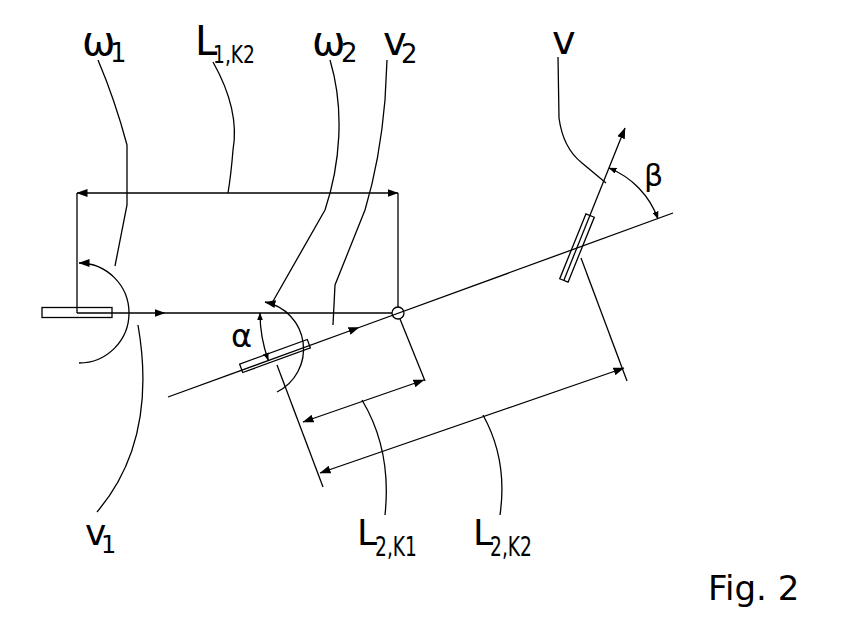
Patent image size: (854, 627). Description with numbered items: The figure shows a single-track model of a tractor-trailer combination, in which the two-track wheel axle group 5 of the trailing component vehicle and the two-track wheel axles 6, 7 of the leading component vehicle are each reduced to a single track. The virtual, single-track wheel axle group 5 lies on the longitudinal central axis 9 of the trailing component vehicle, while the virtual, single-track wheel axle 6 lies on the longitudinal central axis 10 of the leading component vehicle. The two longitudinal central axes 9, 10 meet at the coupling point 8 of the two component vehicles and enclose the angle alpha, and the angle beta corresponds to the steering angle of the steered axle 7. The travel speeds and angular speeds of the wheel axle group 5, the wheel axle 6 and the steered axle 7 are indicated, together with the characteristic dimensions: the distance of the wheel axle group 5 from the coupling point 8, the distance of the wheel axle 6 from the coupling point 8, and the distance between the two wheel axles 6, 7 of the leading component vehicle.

The wheel axle group 5 is at (57, 320).
The wheel axle 6 is at (259, 384).
The steered axle 7 is at (598, 268).
The coupling point 8 is at (403, 304).
The longitudinal central axis 9 is at (197, 313).
The longitudinal central axis 10 is at (490, 278).